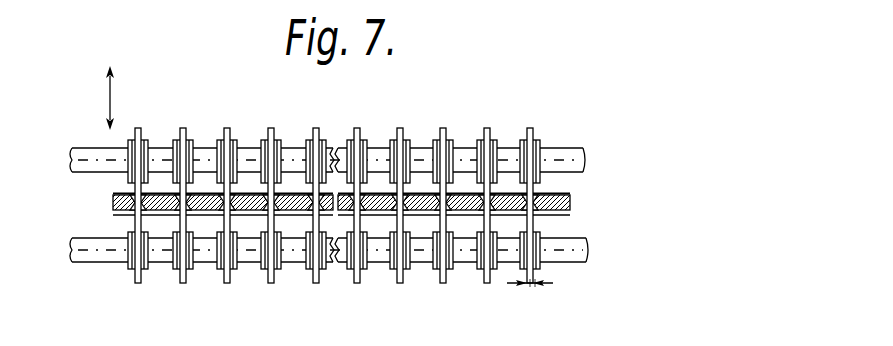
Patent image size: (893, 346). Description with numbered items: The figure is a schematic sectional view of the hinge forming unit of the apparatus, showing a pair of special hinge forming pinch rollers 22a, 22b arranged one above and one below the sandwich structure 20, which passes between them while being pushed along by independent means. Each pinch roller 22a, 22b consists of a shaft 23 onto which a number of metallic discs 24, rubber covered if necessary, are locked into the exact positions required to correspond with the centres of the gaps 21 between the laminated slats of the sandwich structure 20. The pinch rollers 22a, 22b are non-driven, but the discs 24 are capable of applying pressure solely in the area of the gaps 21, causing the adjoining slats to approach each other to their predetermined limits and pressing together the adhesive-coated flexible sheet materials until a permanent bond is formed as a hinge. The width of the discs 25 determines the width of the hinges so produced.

The sandwich structure 20 is at (346, 199).
The gaps 21 is at (125, 196).
The hinge forming pinch roller 22a is at (600, 149).
The hinge forming pinch roller 22b is at (600, 251).
The shaft 23 is at (82, 156).
The metallic discs 24 is at (185, 128).
The width of the discs 25 is at (537, 285).